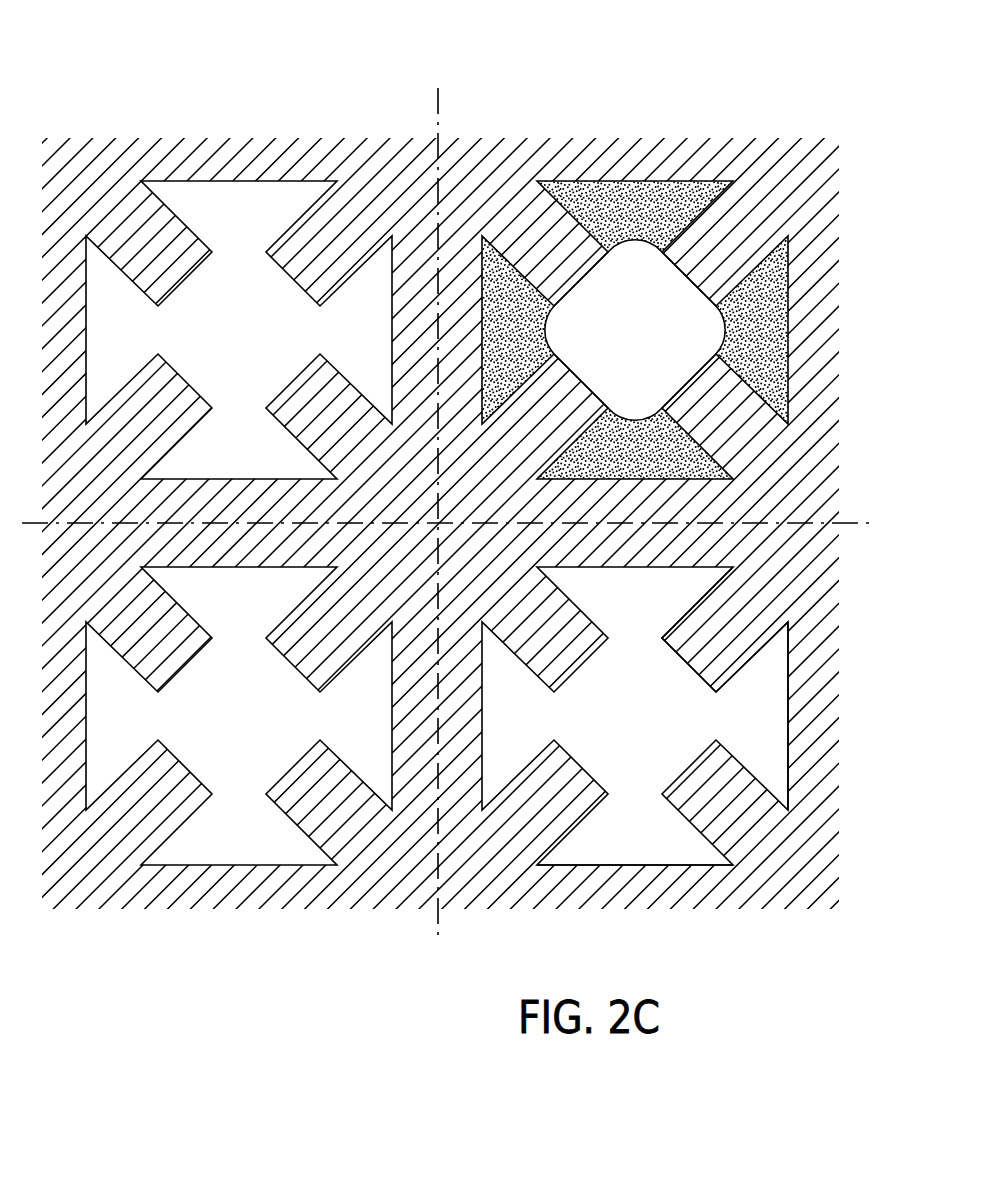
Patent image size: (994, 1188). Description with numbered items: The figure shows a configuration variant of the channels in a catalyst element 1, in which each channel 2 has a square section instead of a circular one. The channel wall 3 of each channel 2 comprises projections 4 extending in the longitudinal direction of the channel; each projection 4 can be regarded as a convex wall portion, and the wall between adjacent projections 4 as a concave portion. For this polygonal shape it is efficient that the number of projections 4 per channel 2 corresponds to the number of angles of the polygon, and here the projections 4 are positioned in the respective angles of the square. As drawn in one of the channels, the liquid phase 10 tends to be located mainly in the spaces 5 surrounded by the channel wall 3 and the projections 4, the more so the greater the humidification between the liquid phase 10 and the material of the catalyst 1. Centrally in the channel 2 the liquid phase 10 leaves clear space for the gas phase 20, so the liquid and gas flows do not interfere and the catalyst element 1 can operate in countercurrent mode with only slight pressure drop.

The catalyst element 1 is at (732, 92).
The channel 2 is at (620, 735).
The channel wall 3 is at (787, 738).
The projection 4 is at (693, 673).
The space 5 is at (650, 846).
The liquid phase 10 is at (763, 340).
The gas phase 20 is at (658, 349).